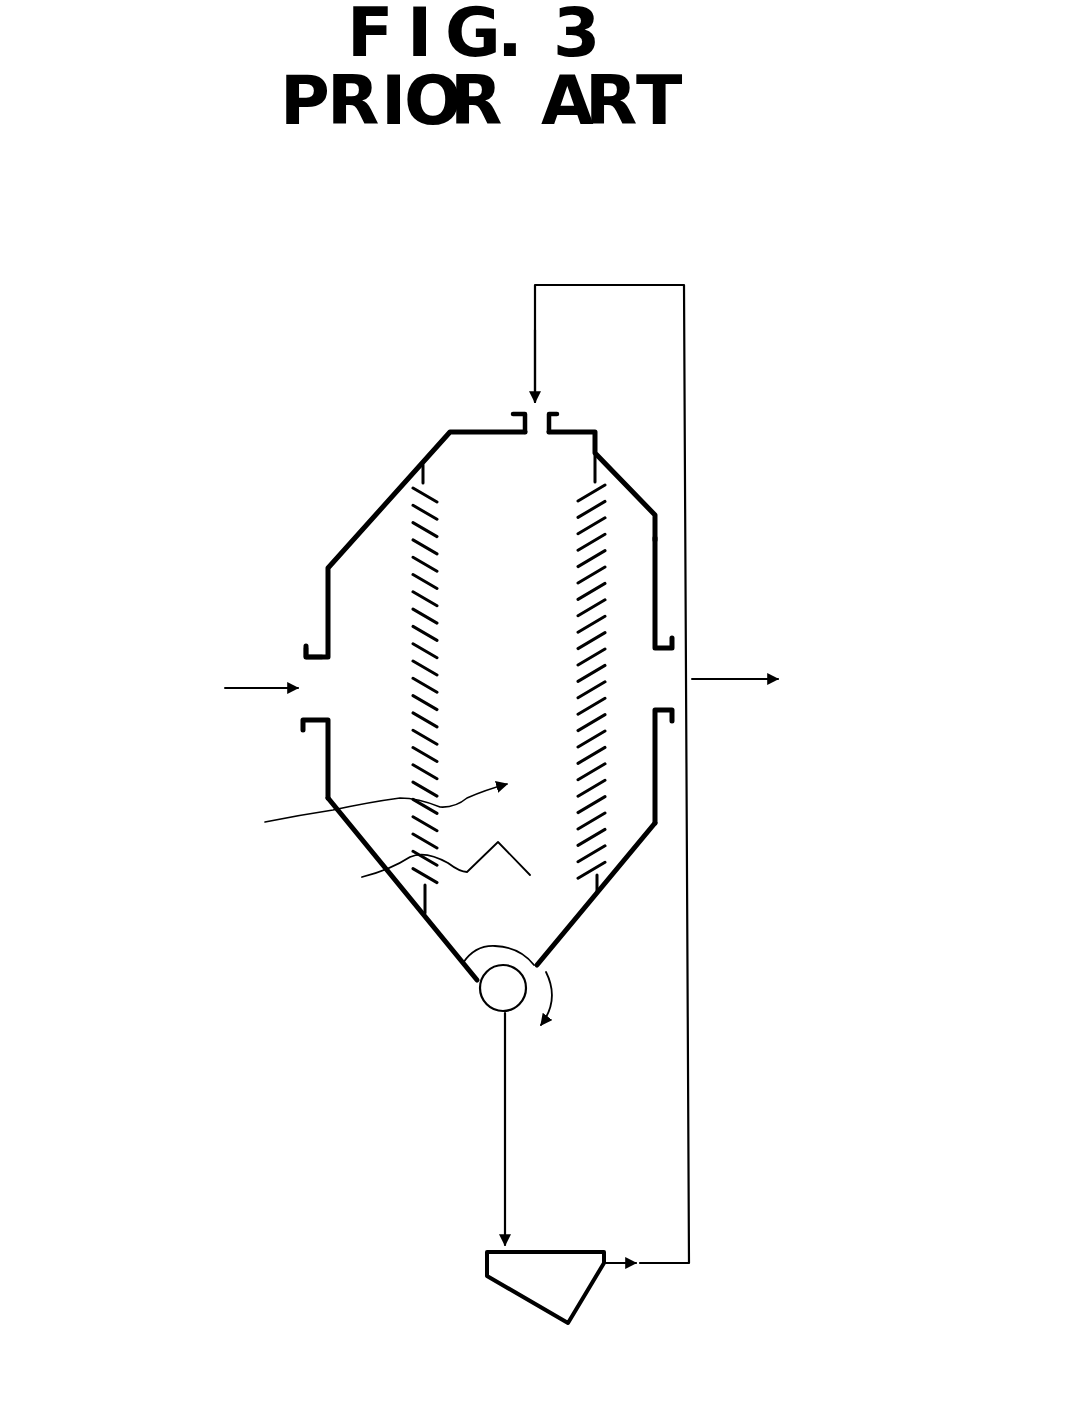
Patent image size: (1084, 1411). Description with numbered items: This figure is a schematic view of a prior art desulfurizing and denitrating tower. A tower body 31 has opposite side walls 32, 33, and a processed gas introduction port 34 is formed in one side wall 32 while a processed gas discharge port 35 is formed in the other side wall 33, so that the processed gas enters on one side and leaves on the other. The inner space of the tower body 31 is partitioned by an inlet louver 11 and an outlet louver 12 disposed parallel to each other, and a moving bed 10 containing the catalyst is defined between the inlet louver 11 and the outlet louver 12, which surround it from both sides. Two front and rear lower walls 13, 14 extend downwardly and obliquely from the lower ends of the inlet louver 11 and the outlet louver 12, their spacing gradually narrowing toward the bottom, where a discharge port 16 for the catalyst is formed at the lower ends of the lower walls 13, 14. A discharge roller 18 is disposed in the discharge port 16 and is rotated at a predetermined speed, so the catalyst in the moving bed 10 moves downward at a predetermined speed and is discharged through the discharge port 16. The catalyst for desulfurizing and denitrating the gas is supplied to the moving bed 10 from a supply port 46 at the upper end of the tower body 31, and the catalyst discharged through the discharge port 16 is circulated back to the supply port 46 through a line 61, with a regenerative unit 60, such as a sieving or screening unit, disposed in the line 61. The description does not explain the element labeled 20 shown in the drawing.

The moving bed 10 is at (255, 858).
The inlet louver 11 is at (417, 565).
The outlet louver 12 is at (603, 510).
The lower wall 13 is at (420, 895).
The lower wall 14 is at (598, 878).
The discharge port 16 is at (477, 972).
The discharge roller 18 is at (482, 1005).
The particles 20 is at (414, 878).
The tower body 31 is at (663, 560).
The side wall 32 is at (342, 548).
The side wall 33 is at (658, 598).
The processed gas introduction port 34 is at (313, 655).
The processed gas discharge port 35 is at (662, 698).
The supply port 46 is at (557, 418).
The regenerative unit 60 is at (525, 1293).
The line 61 is at (653, 1266).